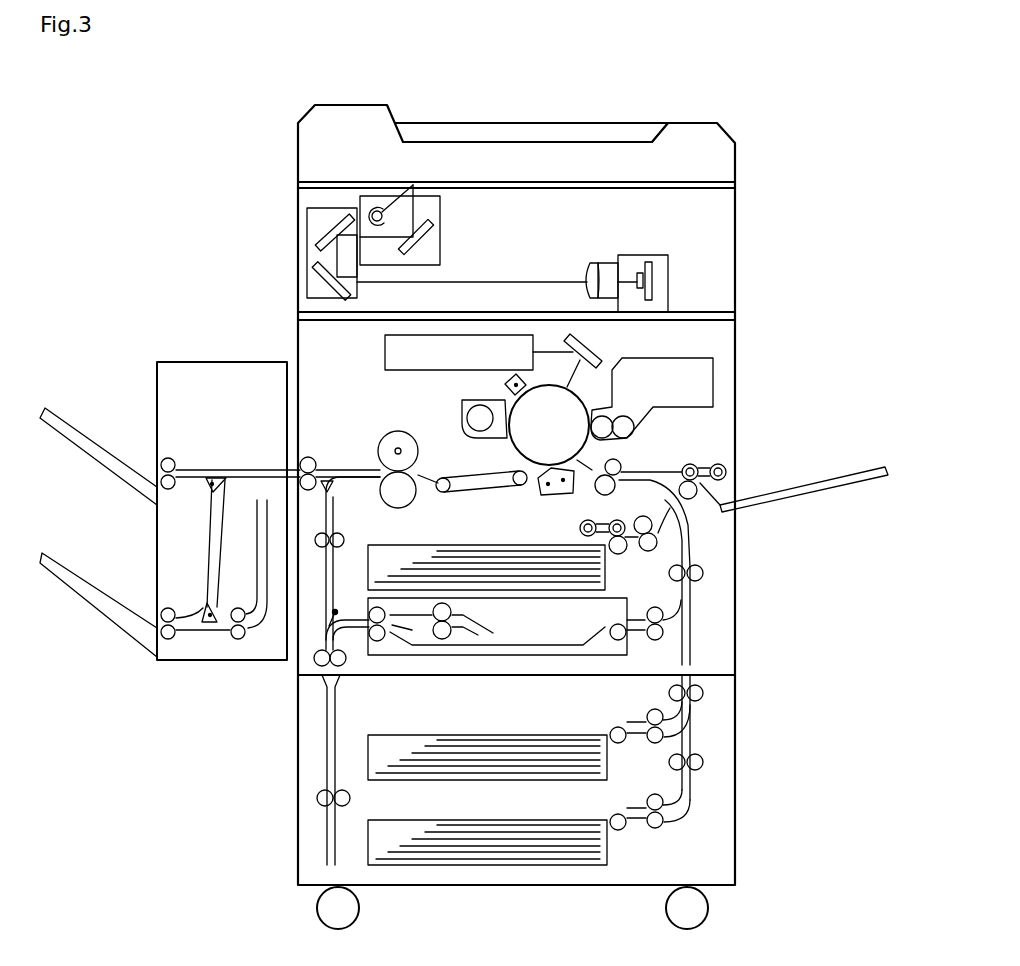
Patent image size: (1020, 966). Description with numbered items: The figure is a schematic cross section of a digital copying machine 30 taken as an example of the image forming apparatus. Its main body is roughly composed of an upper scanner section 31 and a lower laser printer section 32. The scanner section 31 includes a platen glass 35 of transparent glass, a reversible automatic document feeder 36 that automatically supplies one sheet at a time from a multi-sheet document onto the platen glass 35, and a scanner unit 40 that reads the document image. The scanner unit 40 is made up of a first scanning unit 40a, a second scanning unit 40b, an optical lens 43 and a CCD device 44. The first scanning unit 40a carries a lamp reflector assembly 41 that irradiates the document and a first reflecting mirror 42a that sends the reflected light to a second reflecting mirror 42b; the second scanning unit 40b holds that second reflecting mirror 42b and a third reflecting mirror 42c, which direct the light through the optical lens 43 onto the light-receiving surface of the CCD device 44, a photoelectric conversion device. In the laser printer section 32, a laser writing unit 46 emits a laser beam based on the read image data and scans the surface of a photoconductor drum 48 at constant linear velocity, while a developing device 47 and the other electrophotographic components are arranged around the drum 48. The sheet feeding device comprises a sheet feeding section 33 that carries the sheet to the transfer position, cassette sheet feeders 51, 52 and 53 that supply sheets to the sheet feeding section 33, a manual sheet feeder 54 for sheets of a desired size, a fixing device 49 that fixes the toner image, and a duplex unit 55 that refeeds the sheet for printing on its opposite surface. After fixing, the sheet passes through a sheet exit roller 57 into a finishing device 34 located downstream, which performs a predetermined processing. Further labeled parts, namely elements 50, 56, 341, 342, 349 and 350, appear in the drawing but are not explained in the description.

The digital copying machine 30 is at (808, 245).
The scanner section 31 is at (735, 222).
The laser printer section 32 is at (735, 382).
The sheet feeding section 33 is at (648, 467).
The finishing device 34 is at (193, 362).
The platen glass 35 is at (508, 182).
The reversible automatic document feeder 36 is at (590, 162).
The scanner unit 40 is at (322, 196).
The first scanning unit 40a is at (440, 258).
The second scanning unit 40b is at (358, 293).
The lamp reflector assembly 41 is at (405, 212).
The first reflecting mirror 42a is at (437, 237).
The second reflecting mirror 42b is at (325, 233).
The third reflecting mirror 42c is at (320, 272).
The optical lens 43 is at (588, 273).
The CCD device 44 is at (633, 263).
The laser writing unit 46 is at (423, 372).
The developing device 47 is at (700, 351).
The photoconductor drum 48 is at (592, 402).
The fixing device 49 is at (418, 450).
The paper feed unit 50 is at (712, 650).
The cassette sheet feeder 51 is at (403, 543).
The cassette sheet feeder 52 is at (450, 735).
The cassette sheet feeder 53 is at (445, 822).
The manual sheet feeder 54 is at (807, 482).
The duplex unit 55 is at (447, 658).
The paper conveyance path 56 is at (333, 513).
The sheet exit roller 57 is at (313, 457).
The first output tray 341 is at (70, 435).
The second output tray 342 is at (97, 598).
The first tray discharge rollers 349 is at (167, 455).
The second tray discharge rollers 350 is at (167, 613).